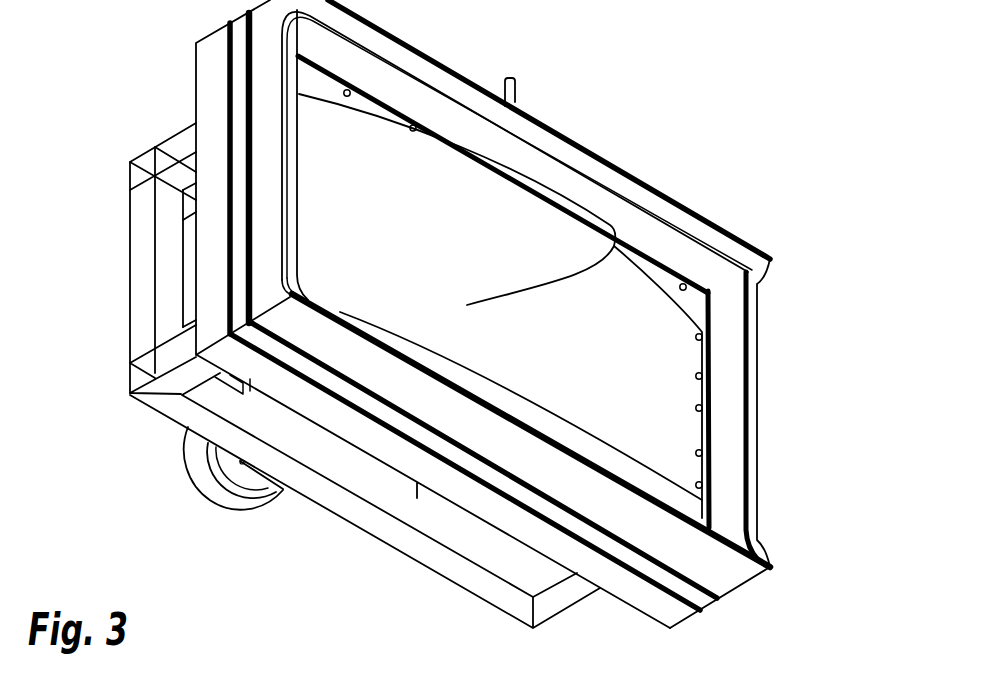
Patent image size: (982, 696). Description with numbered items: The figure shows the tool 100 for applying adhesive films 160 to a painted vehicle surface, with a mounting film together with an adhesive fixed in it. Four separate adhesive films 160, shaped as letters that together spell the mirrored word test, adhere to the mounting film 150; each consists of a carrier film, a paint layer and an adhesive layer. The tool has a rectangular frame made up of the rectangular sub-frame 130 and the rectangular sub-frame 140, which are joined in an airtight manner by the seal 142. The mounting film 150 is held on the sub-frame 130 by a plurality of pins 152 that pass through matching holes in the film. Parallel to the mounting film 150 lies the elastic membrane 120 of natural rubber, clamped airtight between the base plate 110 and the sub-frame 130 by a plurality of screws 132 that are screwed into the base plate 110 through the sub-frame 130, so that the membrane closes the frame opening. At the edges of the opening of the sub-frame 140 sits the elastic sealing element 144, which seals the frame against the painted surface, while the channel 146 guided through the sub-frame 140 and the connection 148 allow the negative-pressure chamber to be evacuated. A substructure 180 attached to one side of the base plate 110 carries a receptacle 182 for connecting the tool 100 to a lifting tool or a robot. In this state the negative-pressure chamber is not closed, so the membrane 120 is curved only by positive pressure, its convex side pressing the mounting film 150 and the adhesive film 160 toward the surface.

The tool 100 is at (648, 140).
The base plate 110 is at (217, 136).
The elastic membrane 120 is at (227, 87).
The sub-frame 130 is at (700, 609).
The screws 132 is at (350, 91).
The sub-frame 140 is at (697, 570).
The seal 142 is at (707, 598).
The elastic sealing element 144 is at (748, 503).
The channel 146 is at (518, 148).
The connection 148 is at (517, 100).
The mounting film 150 is at (647, 413).
The pins 152 is at (703, 337).
The adhesive films 160 is at (612, 223).
The substructure 180 is at (172, 400).
The receptacle 182 is at (210, 470).